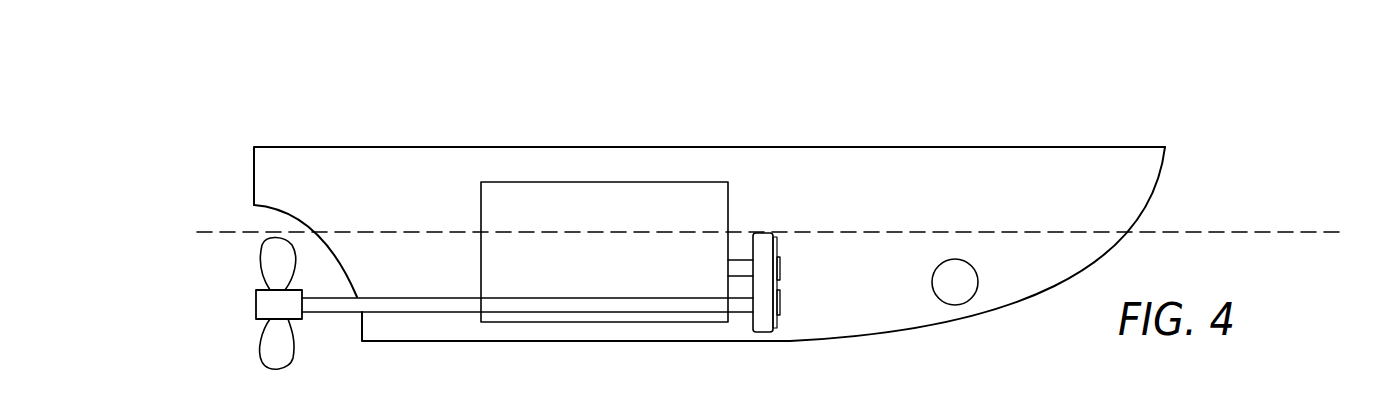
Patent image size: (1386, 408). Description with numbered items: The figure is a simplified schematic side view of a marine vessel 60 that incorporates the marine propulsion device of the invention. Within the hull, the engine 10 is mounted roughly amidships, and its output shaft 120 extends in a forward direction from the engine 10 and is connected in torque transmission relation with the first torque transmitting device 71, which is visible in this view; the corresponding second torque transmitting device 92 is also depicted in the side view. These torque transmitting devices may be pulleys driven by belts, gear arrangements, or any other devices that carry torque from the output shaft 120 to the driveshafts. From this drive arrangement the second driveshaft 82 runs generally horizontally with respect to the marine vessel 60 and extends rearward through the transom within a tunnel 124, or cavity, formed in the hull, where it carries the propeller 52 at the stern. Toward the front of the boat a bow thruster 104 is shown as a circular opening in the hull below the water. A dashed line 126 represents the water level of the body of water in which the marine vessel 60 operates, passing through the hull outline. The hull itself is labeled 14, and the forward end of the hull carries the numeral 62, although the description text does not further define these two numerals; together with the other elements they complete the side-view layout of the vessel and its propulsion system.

The marine vessel 60 is at (835, 115).
The hull 14 is at (254, 174).
The bow of hull 62 is at (1163, 168).
The tunnel 124 is at (327, 252).
The dashed line 126 is at (1267, 232).
The engine 10 is at (533, 182).
The output shaft 120 is at (740, 268).
The first torque transmitting device 71 is at (777, 247).
The second torque transmitting device 92 is at (777, 325).
The second driveshaft 82 is at (417, 301).
The propeller 52 is at (292, 355).
The bow thruster 104 is at (972, 278).